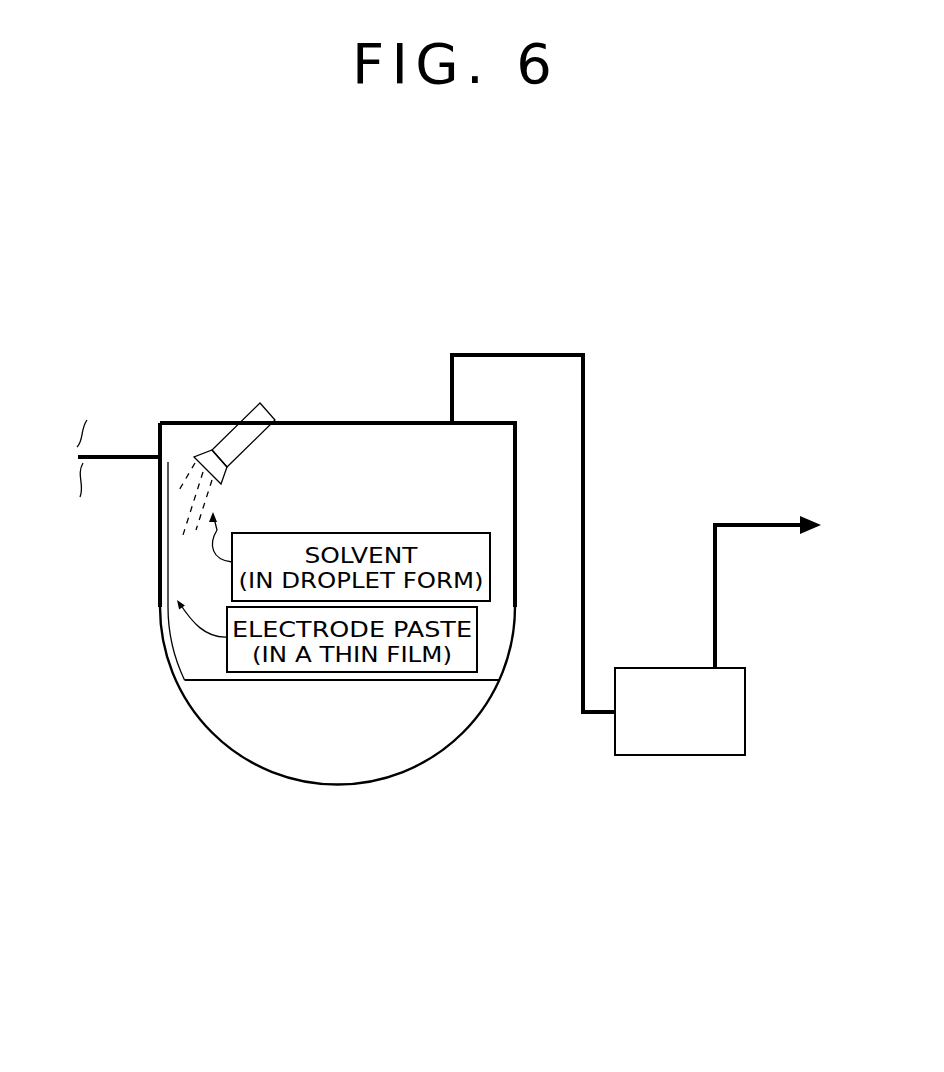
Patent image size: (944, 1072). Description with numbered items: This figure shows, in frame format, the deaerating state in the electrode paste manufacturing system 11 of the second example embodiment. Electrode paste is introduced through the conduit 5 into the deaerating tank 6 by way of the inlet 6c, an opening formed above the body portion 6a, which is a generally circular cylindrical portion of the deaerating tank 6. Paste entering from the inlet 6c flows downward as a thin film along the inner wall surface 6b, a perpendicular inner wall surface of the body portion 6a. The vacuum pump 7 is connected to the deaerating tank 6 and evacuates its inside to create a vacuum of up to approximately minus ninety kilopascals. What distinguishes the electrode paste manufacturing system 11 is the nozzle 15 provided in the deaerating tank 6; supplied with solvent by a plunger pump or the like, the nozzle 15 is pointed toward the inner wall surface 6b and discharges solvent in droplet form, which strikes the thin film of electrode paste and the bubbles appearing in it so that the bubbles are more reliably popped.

The conduit 5 is at (111, 482).
The deaerating tank 6 is at (348, 812).
The body portion 6a is at (524, 524).
The inner wall surface 6b is at (172, 550).
The inlet 6c is at (160, 456).
The vacuum pump 7 is at (679, 782).
The electrode paste manufacturing system 11 is at (689, 328).
The nozzle 15 is at (245, 402).